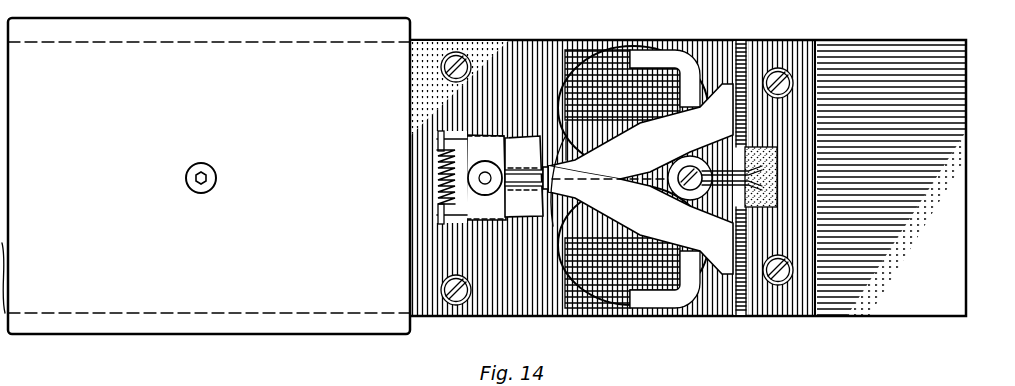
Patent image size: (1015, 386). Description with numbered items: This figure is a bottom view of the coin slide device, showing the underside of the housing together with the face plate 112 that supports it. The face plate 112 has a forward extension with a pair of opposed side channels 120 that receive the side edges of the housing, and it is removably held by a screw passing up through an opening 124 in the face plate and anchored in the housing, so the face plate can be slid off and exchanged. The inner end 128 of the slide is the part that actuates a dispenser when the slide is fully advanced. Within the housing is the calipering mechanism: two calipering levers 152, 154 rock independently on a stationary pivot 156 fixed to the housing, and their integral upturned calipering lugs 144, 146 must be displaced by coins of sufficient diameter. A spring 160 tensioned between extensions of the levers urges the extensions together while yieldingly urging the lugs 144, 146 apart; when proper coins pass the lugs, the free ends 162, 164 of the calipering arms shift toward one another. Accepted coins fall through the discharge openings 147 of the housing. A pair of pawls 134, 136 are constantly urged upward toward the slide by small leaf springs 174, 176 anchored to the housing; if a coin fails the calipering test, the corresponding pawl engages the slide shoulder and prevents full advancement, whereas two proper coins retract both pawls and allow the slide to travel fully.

The face plate 112 is at (193, 28).
The opposed side channels 120 is at (38, 42).
The opening 124 is at (201, 193).
The inner end of the slide 128 is at (958, 277).
The pawl 134 is at (766, 193).
The pawl 136 is at (768, 148).
The calipering lug 144 is at (524, 188).
The calipering lug 146 is at (524, 168).
The discharge openings 147 is at (587, 61).
The calipering lever 152 is at (553, 222).
The calipering lever 154 is at (575, 152).
The stationary pivot 156 is at (481, 178).
The spring 160 is at (437, 164).
The free end of calipering arm 162 is at (742, 257).
The free end of calipering arm 164 is at (742, 92).
The leaf spring 174 is at (695, 210).
The leaf spring 176 is at (700, 131).